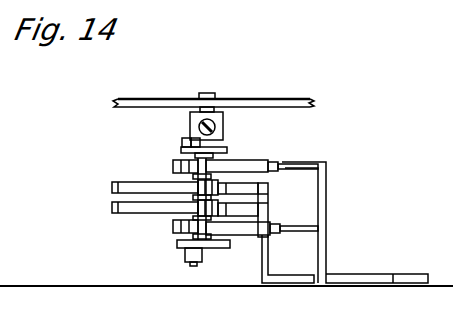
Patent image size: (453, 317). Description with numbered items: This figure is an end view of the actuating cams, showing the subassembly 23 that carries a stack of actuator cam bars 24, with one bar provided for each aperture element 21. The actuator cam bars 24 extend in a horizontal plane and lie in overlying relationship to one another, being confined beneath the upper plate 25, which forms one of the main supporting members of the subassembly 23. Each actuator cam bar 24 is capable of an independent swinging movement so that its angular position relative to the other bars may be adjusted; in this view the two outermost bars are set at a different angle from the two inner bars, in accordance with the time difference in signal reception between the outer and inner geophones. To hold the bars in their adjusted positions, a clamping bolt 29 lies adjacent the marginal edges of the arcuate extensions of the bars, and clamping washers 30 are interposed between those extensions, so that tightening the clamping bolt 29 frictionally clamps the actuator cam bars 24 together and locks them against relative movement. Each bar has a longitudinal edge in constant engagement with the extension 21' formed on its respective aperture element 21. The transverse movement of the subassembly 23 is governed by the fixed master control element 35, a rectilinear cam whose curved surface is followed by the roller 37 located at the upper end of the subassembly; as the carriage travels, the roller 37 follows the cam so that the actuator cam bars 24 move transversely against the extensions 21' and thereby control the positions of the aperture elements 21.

The aperture element 21 is at (314, 259).
The extension 21' is at (355, 213).
The subassembly 23 is at (190, 117).
The actuator cam bar 24 is at (112, 206).
The upper plate 25 is at (223, 135).
The clamping bolt 29 is at (185, 262).
The clamping washer 30 is at (178, 222).
The master control element 35 is at (263, 98).
The roller 37 is at (206, 93).